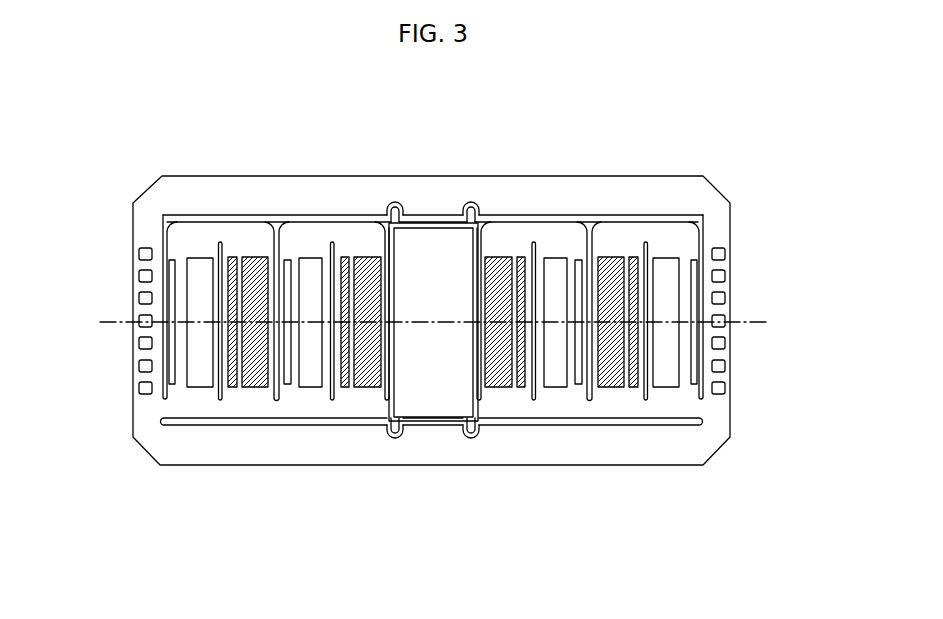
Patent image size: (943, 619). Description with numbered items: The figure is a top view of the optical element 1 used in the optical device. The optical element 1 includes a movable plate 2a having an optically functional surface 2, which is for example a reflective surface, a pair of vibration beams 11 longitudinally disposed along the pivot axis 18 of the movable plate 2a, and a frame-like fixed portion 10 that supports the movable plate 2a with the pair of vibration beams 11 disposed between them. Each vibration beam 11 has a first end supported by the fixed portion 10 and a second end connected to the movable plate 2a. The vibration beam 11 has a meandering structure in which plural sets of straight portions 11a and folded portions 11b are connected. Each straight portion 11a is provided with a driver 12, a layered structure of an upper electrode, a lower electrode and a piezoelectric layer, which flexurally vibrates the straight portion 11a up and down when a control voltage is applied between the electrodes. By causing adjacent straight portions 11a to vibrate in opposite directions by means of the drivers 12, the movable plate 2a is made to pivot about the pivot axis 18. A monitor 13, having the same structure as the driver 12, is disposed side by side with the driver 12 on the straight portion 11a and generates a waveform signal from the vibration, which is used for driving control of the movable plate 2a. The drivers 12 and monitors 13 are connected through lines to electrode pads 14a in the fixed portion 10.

The optical element 1 is at (153, 140).
The optically functional surface 2 is at (435, 247).
The movable plate 2a is at (387, 220).
The fixed portion 10 is at (430, 450).
The vibration beam 11 is at (175, 527).
The straight portion 11a is at (180, 358).
The folded portion 11b is at (218, 232).
The driver 12 is at (495, 353).
The monitor 13 is at (577, 352).
The electrode pad 14a is at (719, 250).
The pivot axis 18 is at (450, 322).